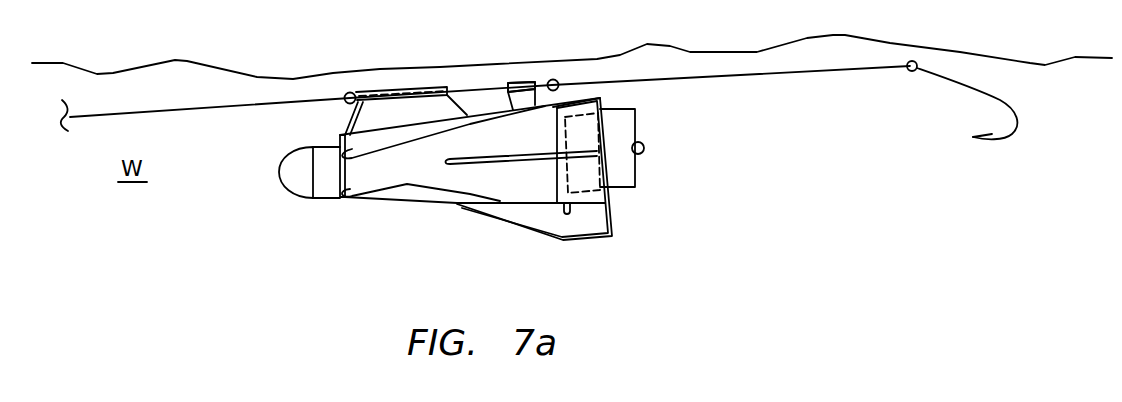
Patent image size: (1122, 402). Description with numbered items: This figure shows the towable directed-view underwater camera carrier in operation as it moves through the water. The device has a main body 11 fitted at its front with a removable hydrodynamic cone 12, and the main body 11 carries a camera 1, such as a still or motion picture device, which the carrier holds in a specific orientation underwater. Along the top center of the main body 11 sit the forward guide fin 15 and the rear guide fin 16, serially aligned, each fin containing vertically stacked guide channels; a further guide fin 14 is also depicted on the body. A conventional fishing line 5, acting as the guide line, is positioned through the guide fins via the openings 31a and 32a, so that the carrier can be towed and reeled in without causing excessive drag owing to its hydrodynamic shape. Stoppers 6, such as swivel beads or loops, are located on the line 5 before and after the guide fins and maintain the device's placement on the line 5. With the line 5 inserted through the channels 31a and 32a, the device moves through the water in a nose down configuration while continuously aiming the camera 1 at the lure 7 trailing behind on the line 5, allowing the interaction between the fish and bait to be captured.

The camera 1 is at (623, 167).
The fishing line 5 is at (172, 110).
The stoppers 6 is at (345, 102).
The lure 7 is at (963, 82).
The main body 11 is at (407, 167).
The hydrodynamic cone 12 is at (302, 182).
The guide fin 14 is at (573, 227).
The forward guide fin 15 is at (408, 110).
The rear guide fin 16 is at (522, 92).
The guide channel 31a is at (356, 90).
The guide channel 32a is at (507, 88).